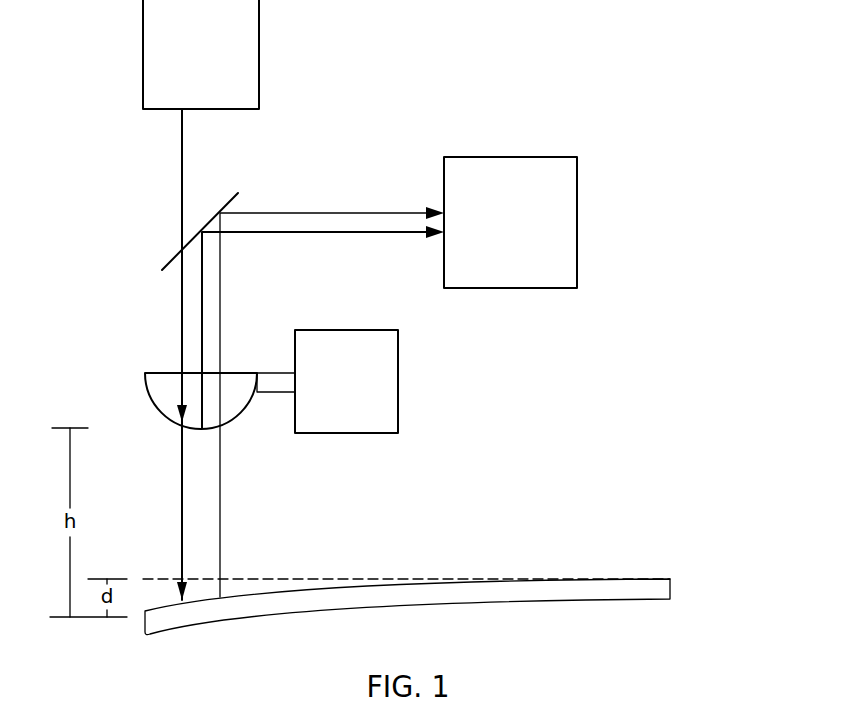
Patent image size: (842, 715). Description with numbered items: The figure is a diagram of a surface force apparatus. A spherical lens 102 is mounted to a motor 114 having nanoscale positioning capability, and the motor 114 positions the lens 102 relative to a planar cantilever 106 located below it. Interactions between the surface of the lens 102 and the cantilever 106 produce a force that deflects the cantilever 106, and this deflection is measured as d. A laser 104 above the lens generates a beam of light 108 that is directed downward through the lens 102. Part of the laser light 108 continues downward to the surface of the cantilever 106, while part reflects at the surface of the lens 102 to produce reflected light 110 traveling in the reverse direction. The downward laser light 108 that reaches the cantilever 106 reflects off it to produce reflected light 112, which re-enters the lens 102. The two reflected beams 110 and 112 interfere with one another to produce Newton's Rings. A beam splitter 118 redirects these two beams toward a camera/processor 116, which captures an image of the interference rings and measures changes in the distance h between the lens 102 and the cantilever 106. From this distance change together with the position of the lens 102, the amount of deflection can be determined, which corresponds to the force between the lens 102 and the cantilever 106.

The spherical lens 102 is at (147, 388).
The laser 104 is at (180, 77).
The planar cantilever 106 is at (670, 590).
The beam of light 108 is at (182, 222).
The reflected light 110 is at (202, 298).
The reflected light 112 is at (220, 505).
The motor 114 is at (326, 407).
The camera/processor 116 is at (510, 222).
The beam splitter 118 is at (238, 193).